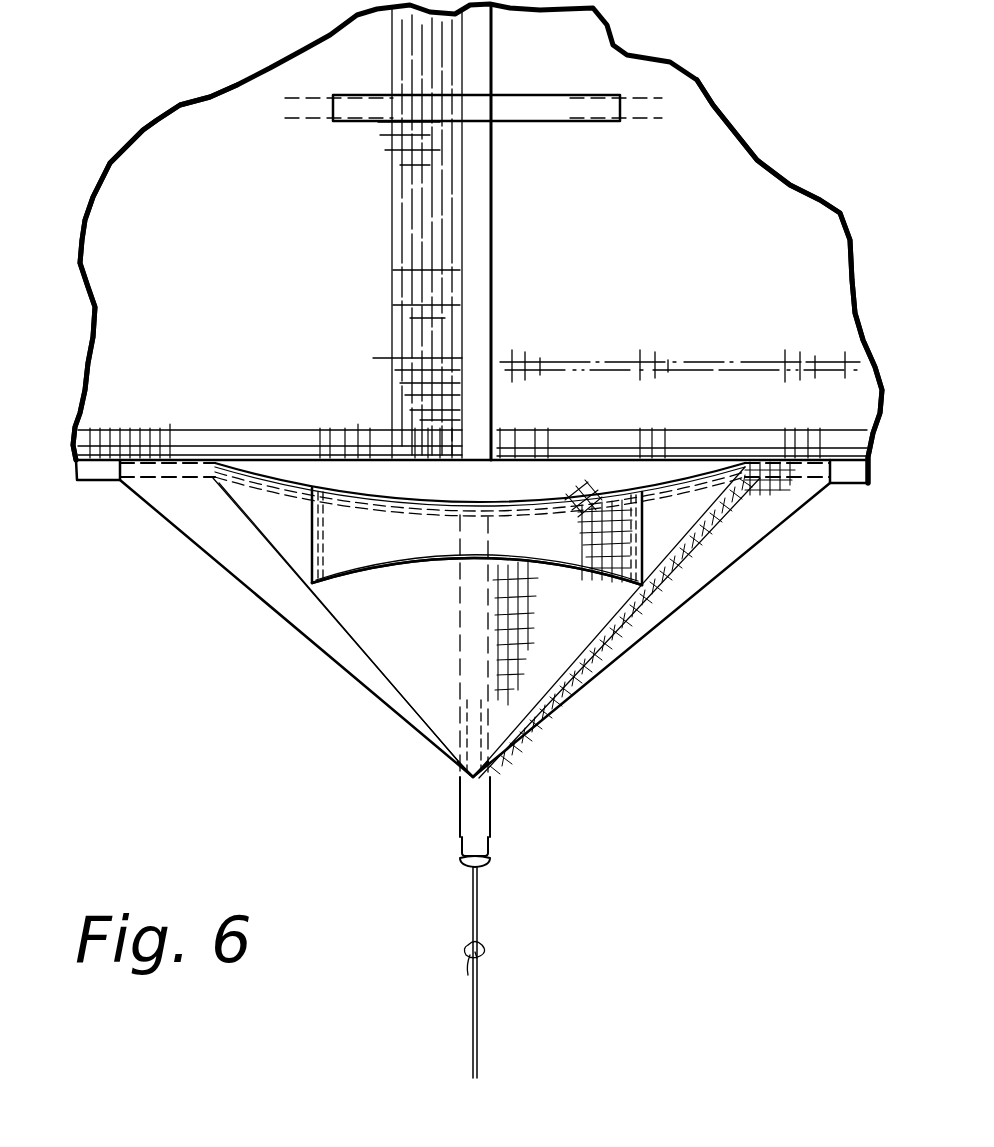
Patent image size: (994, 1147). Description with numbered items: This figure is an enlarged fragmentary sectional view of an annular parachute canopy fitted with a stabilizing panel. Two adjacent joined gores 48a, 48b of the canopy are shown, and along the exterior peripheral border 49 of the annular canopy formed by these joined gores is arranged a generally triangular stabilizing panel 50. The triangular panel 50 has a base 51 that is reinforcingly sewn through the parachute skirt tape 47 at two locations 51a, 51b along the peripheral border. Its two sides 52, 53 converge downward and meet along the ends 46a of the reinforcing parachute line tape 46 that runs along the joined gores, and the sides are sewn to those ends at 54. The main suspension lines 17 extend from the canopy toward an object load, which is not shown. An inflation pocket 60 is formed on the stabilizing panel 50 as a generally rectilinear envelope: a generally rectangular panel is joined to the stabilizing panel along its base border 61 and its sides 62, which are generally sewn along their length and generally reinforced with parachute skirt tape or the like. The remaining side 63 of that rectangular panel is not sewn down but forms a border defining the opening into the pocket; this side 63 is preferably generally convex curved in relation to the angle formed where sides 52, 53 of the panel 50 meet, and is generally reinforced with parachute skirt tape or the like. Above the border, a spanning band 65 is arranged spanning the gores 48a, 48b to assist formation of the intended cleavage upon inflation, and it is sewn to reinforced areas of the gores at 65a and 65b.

The main suspension lines 17 is at (480, 1020).
The reinforcing parachute line tape 46 is at (485, 268).
The ends of reinforcing parachute line tape 46a is at (490, 800).
The parachute skirt tape 47 is at (845, 480).
The gore 48a is at (690, 293).
The gore 48b is at (250, 293).
The exterior peripheral border 49 is at (96, 472).
The stabilizing panel 50 is at (726, 550).
The base 51 is at (660, 472).
The sewn location of base 51a is at (228, 390).
The sewn location of base 51b is at (785, 478).
The side 52 is at (656, 622).
The side 53 is at (310, 638).
The sewn location of sides 54 is at (460, 768).
The inflation pocket 60 is at (591, 594).
The base border 61 is at (522, 520).
The sides 62 is at (310, 500).
The side 63 is at (446, 563).
The spanning band 65 is at (510, 99).
The sewn location of spanning band 65a is at (565, 115).
The sewn location of spanning band 65b is at (346, 112).